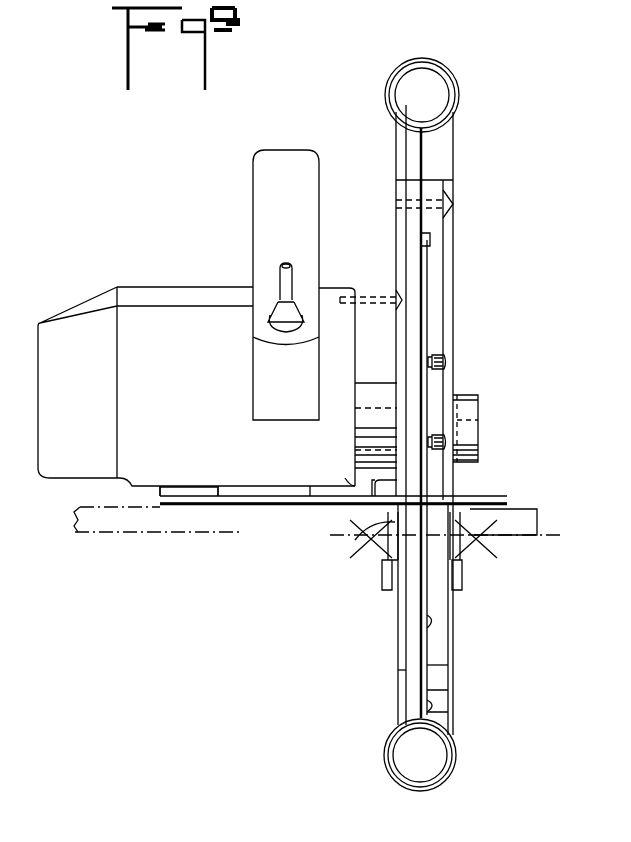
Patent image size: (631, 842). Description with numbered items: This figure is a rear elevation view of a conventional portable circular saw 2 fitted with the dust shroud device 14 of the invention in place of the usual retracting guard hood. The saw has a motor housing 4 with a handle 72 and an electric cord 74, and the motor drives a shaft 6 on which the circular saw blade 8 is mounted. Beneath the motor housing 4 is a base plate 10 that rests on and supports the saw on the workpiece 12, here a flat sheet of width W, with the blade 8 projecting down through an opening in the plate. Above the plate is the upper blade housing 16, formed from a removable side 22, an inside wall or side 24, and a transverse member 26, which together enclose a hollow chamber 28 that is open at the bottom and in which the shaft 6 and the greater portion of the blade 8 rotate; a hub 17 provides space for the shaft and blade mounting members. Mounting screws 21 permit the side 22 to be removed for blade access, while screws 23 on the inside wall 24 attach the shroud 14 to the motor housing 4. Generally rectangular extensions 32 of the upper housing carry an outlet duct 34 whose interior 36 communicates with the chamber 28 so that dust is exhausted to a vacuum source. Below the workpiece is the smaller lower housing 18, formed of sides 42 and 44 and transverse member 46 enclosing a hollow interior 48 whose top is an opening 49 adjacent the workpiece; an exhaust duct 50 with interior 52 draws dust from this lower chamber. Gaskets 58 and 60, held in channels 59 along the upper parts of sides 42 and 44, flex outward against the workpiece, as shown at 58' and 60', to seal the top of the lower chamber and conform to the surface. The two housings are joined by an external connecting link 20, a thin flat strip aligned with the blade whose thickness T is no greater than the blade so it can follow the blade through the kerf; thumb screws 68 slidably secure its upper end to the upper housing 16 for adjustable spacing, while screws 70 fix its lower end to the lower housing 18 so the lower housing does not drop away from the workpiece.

The portable circular saw 2 is at (157, 252).
The motor housing 4 is at (163, 369).
The shaft 6 is at (455, 405).
The circular saw blade 8 is at (430, 238).
The base plate 10 is at (225, 510).
The workpiece 12 is at (110, 520).
The dust shroud device 14 is at (535, 324).
The upper blade housing 16 is at (396, 197).
The hub 17 is at (478, 421).
The lower blade housing 18 is at (450, 615).
The external connecting link 20 is at (445, 468).
The mounting screws 21 is at (448, 204).
The side 22 is at (453, 222).
The screws 23 is at (398, 290).
The side 24 is at (396, 229).
The transverse member 26 is at (443, 180).
The chamber 28 is at (430, 268).
The rectangular extensions 32 is at (455, 150).
The outlet duct 34 is at (458, 82).
The interior of duct 36 is at (434, 107).
The side 42 is at (442, 665).
The side 44 is at (398, 670).
The transverse member 46 is at (438, 678).
The hollow interior 48 is at (440, 672).
The opening 49 is at (395, 522).
The exhaust duct 50 is at (456, 765).
The interior of exhaust duct 52 is at (432, 767).
The gasket 58 is at (436, 555).
The flexed gasket 58' is at (539, 553).
The channels 59 is at (388, 588).
The gasket 60 is at (354, 584).
The flexed gasket 60' is at (339, 554).
The thumb screws 68 is at (448, 443).
The screws 70 is at (430, 635).
The handle 72 is at (297, 401).
The electric cord 74 is at (280, 275).
The thickness of connecting link T is at (375, 485).
The workpiece width W is at (34, 545).